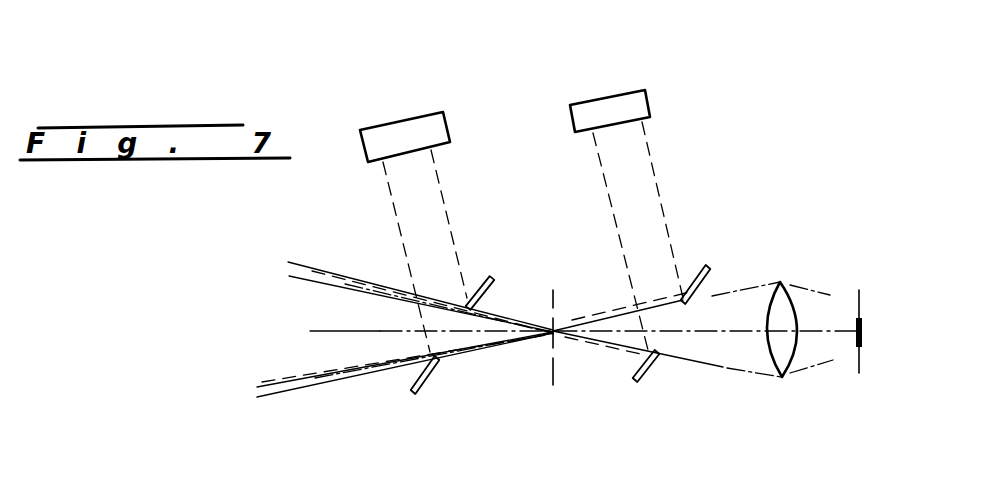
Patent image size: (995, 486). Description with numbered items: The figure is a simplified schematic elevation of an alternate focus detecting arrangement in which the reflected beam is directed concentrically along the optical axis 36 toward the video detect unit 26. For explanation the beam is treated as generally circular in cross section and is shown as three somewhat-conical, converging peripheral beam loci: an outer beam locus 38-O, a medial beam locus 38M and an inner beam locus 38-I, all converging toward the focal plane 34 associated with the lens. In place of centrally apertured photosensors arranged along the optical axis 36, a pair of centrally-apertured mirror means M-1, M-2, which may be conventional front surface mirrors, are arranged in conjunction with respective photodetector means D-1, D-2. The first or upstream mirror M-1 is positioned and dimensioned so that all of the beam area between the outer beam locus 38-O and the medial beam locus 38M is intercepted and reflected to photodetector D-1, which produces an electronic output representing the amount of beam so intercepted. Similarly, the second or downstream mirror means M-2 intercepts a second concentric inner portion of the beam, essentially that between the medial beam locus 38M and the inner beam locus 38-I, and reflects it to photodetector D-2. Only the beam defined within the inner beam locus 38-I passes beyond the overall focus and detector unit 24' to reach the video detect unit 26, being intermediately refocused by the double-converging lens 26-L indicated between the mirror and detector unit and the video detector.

The focus and detector unit 24' is at (521, 184).
The first photodetector means D-1 is at (413, 232).
The second photodetector means D-2 is at (626, 220).
The first or upstream mirror means M-1 is at (490, 278).
The second or downstream mirror means M-2 is at (708, 265).
The outer beam locus 38-O is at (345, 278).
The inner beam locus 38-I is at (410, 300).
The medial beam locus 38M is at (315, 378).
The focal plane 34 is at (553, 386).
The optical axis 36 is at (707, 328).
The double-converging lens 26-L is at (780, 282).
The video detect unit 26 is at (858, 367).